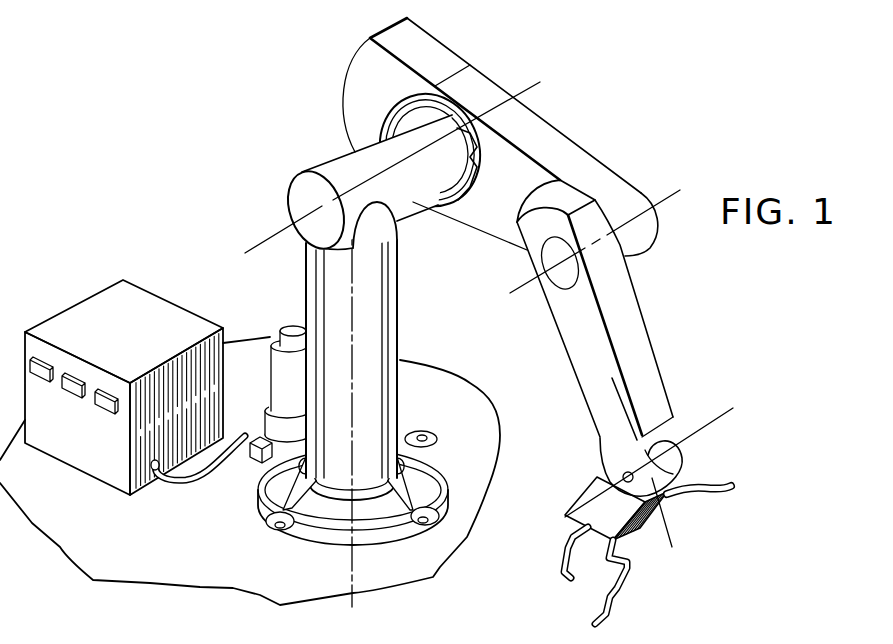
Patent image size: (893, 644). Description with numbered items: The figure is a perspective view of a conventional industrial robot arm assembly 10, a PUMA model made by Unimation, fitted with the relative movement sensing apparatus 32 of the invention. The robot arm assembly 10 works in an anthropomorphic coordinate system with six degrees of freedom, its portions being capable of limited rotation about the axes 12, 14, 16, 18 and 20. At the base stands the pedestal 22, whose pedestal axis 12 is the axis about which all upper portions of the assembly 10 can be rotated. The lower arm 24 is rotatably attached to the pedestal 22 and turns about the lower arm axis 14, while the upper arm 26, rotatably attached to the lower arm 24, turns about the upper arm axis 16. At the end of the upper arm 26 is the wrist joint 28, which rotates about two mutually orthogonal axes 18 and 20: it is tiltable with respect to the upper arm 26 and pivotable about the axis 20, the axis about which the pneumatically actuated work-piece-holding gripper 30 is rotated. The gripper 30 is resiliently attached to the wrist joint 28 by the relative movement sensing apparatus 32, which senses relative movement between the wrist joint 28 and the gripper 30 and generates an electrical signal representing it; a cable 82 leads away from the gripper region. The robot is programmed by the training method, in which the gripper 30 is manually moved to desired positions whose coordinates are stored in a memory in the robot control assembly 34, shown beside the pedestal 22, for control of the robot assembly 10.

The robot arm assembly 10 is at (507, 321).
The pedestal axis 12 is at (353, 323).
The lower arm axis 14 is at (492, 100).
The upper arm axis 16 is at (637, 207).
The wrist joint tilt axis 18 is at (703, 415).
The gripper rotation axis 20 is at (625, 407).
The pedestal 22 is at (397, 342).
The lower arm 24 is at (555, 150).
The upper arm 26 is at (640, 327).
The wrist joint 28 is at (695, 452).
The work-piece-holding gripper 30 is at (640, 550).
The relative movement sensing apparatus 32 is at (597, 490).
The robot control assembly 34 is at (103, 307).
The cable 82 is at (720, 495).